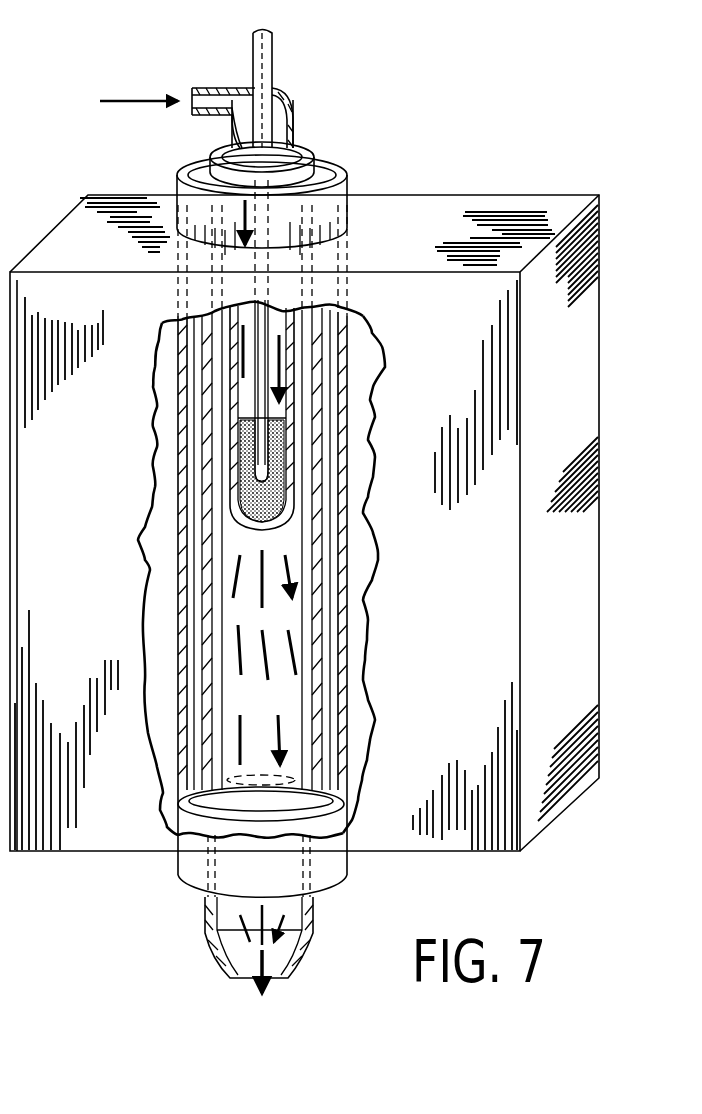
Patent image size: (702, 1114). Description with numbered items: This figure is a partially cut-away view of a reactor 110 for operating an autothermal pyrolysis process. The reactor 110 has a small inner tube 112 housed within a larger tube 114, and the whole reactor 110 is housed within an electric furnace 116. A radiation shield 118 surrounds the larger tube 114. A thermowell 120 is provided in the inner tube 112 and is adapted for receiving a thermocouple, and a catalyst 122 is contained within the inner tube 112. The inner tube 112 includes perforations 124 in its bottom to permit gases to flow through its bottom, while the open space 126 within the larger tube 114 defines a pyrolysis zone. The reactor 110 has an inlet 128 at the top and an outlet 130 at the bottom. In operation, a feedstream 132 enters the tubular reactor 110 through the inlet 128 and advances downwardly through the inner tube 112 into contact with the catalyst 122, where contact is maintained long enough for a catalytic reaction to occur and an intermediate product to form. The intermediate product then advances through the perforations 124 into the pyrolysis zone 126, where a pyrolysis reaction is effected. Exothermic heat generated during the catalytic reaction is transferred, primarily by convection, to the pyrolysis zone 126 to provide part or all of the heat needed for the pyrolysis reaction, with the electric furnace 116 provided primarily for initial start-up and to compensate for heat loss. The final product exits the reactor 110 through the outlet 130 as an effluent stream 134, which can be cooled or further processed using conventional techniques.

The reactor 110 is at (372, 170).
The inner tube 112 is at (290, 410).
The larger tube 114 is at (313, 575).
The furnace 116 is at (557, 423).
The radiation shield 118 is at (347, 636).
The thermowell 120 is at (268, 335).
The catalyst 122 is at (290, 482).
The perforations 124 is at (262, 580).
The open space 126 is at (282, 700).
The inlet 128 is at (215, 88).
The outlet 130 is at (220, 950).
The feedstream 132 is at (140, 101).
The effluent stream 134 is at (264, 1000).